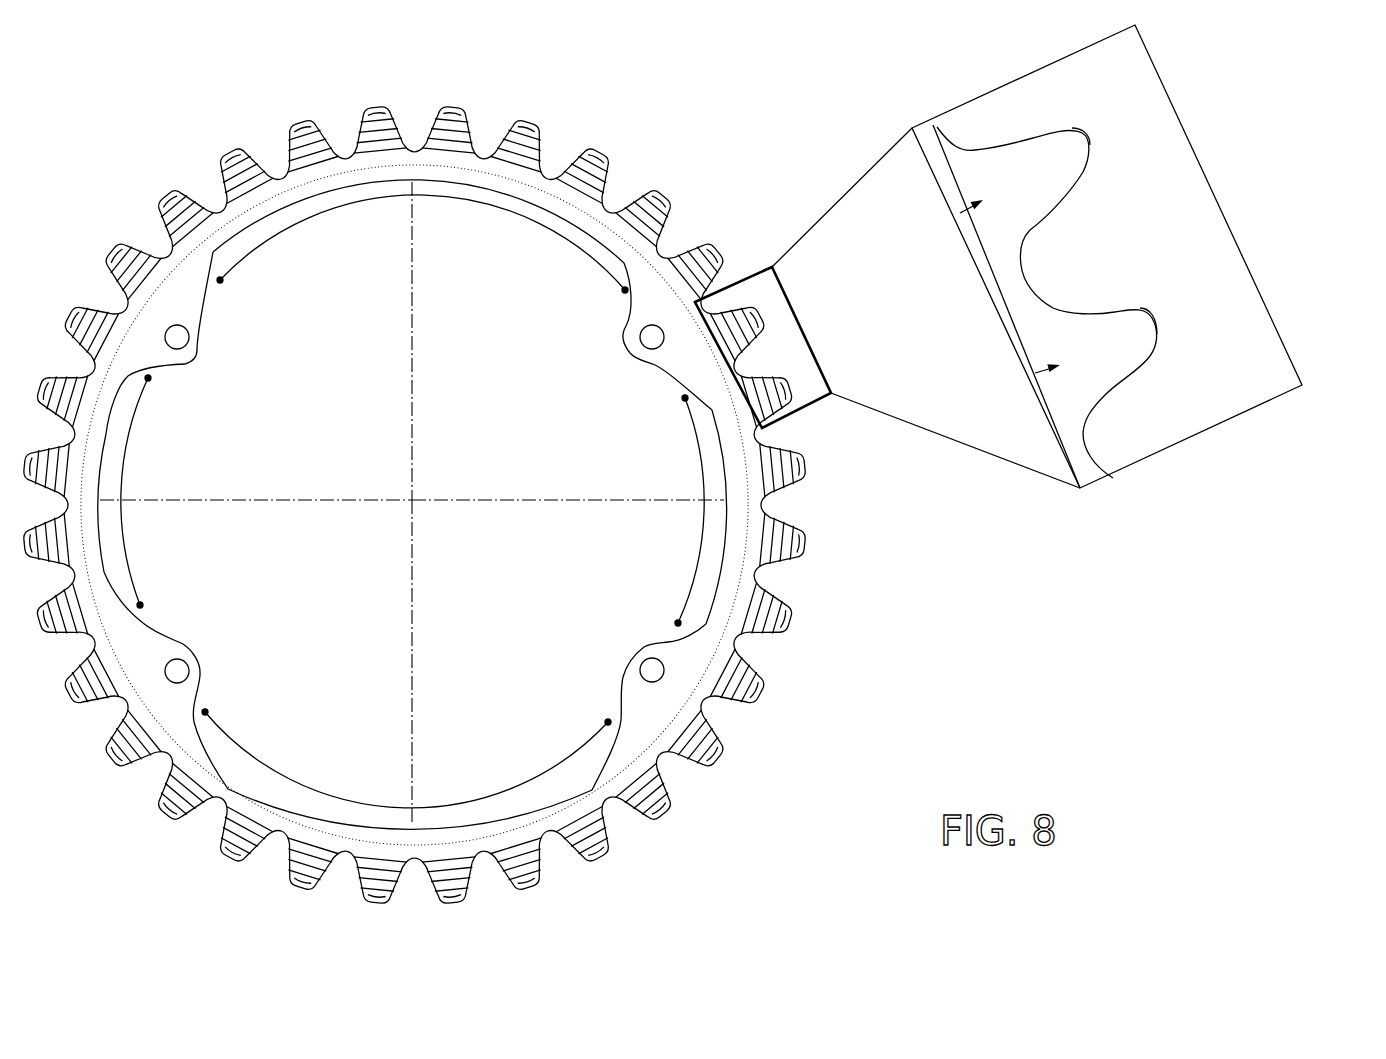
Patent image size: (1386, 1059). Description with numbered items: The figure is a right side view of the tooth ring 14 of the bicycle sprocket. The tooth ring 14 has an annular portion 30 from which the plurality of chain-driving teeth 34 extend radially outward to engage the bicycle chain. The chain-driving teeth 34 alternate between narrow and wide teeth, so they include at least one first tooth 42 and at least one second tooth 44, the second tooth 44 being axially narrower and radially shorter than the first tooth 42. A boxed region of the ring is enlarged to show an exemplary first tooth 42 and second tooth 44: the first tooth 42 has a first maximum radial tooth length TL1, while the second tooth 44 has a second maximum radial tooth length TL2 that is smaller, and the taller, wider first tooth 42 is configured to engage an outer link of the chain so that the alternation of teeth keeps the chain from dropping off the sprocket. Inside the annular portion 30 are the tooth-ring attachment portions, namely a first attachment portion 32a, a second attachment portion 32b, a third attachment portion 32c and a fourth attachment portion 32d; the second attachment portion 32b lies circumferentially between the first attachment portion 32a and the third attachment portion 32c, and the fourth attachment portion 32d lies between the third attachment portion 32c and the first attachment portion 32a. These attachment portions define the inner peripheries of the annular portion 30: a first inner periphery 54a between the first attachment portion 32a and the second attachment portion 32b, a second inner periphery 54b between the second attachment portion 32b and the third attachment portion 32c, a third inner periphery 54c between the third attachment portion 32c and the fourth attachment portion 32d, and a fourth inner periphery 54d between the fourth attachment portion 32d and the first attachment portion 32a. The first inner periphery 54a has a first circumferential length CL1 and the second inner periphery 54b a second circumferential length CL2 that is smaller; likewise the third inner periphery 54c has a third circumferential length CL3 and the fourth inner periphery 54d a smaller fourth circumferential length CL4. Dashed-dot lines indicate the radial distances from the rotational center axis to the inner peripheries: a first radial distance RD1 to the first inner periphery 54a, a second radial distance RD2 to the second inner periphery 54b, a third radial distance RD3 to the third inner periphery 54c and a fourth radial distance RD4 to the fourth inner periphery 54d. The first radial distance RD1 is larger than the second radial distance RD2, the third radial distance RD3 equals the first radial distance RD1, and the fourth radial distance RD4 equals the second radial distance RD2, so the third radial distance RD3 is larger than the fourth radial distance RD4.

The tooth ring 14 is at (1321, 72).
The annular portion 30 is at (414, 469).
The plurality of chain-driving teeth 34 is at (172, 190).
The first tooth 42 is at (961, 191).
The second tooth 44 is at (1008, 360).
The first attachment portion 32a is at (197, 352).
The second attachment portion 32b is at (631, 360).
The third attachment portion 32c is at (626, 652).
The fourth attachment portion 32d is at (200, 652).
The first inner periphery 54a is at (436, 210).
The second inner periphery 54b is at (688, 518).
The third inner periphery 54c is at (442, 786).
The fourth inner periphery 54d is at (145, 518).
The first circumferential length CL1 is at (308, 213).
The second circumferential length CL2 is at (702, 444).
The third circumferential length CL3 is at (317, 790).
The fourth circumferential length CL4 is at (128, 434).
The first radial distance RD1 is at (414, 372).
The second radial distance RD2 is at (573, 497).
The third radial distance RD3 is at (414, 633).
The fourth radial distance RD4 is at (303, 497).
The first maximum radial tooth length TL1 is at (1097, 133).
The second maximum radial tooth length TL2 is at (1168, 326).